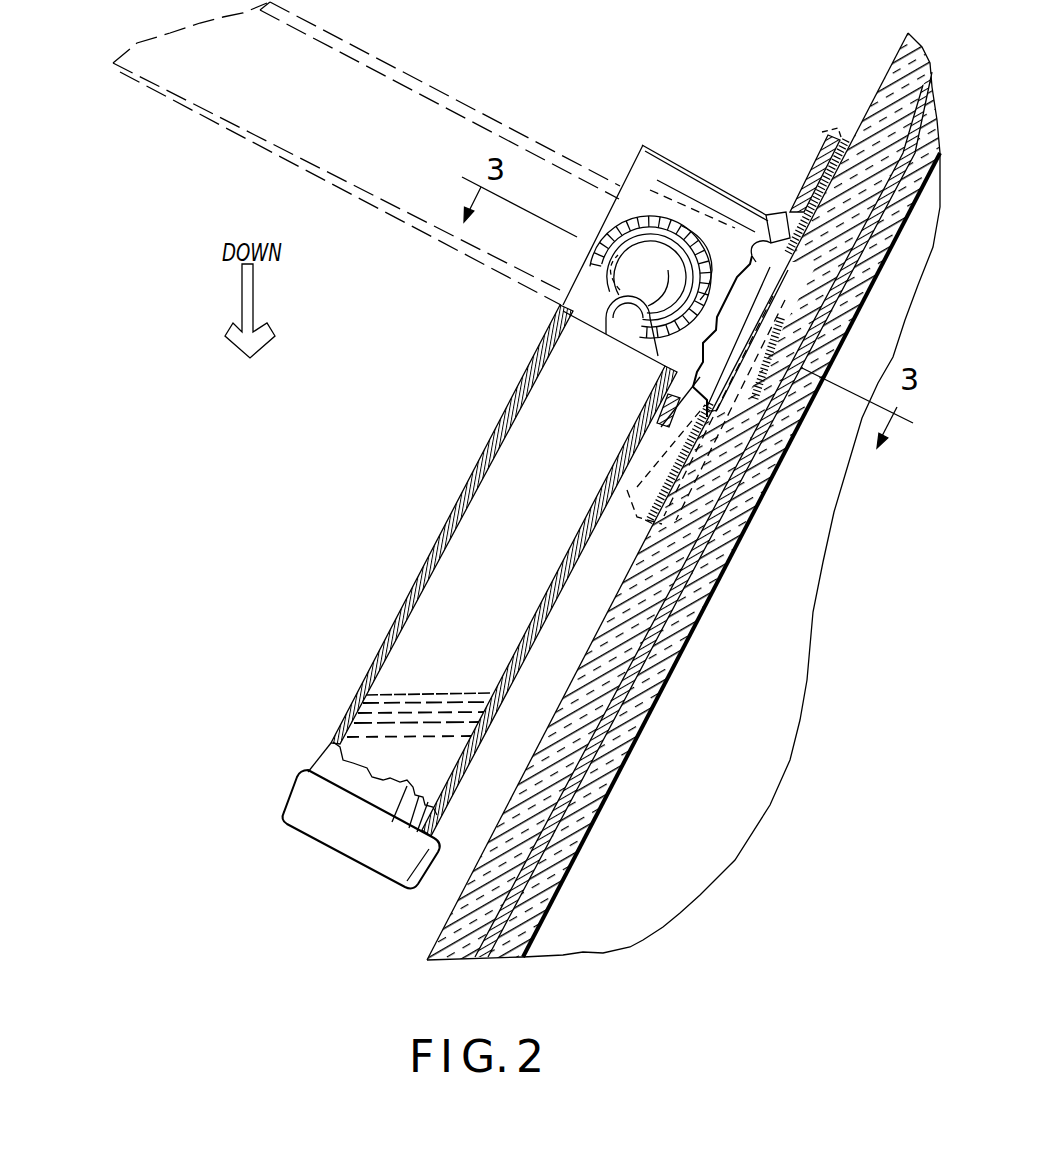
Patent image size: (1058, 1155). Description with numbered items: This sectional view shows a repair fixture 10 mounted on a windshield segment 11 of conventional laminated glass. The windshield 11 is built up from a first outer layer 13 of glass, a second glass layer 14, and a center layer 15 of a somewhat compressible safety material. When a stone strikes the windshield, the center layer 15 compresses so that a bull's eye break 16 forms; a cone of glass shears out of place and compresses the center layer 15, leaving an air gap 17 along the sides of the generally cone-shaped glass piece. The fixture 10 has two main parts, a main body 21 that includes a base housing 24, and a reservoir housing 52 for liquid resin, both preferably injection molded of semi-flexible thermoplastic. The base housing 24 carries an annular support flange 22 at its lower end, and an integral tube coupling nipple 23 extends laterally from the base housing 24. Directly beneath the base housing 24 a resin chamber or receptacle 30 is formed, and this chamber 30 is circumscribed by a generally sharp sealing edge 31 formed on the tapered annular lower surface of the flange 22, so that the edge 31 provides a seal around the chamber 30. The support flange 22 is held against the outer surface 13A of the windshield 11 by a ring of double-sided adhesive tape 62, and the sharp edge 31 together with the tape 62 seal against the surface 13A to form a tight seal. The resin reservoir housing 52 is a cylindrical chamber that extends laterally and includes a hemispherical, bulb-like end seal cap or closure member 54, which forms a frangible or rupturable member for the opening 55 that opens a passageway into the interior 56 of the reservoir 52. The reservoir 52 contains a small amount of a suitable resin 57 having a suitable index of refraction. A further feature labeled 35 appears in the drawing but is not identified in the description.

The repair fixture 10 is at (395, 445).
The windshield segment 11 is at (578, 882).
The first outer layer 13 is at (527, 777).
The outer surface 13A is at (438, 937).
The second glass layer 14 is at (607, 793).
The center layer 15 is at (612, 718).
The bull's eye break 16 is at (810, 413).
The air gap 17 is at (788, 447).
The main body 21 is at (675, 232).
The annular support flange 22 is at (823, 133).
The tube coupling nipple 23 is at (667, 232).
The base housing 24 is at (635, 160).
The resin chamber 30 is at (803, 281).
The sealing edge 31 is at (750, 262).
The adhesive strip 35 is at (757, 228).
The reservoir housing 52 is at (457, 497).
The end seal cap 54 is at (648, 277).
The opening 55 is at (628, 330).
The interior 56 is at (553, 325).
The resin 57 is at (378, 733).
The double sided adhesive tape 62 is at (637, 530).